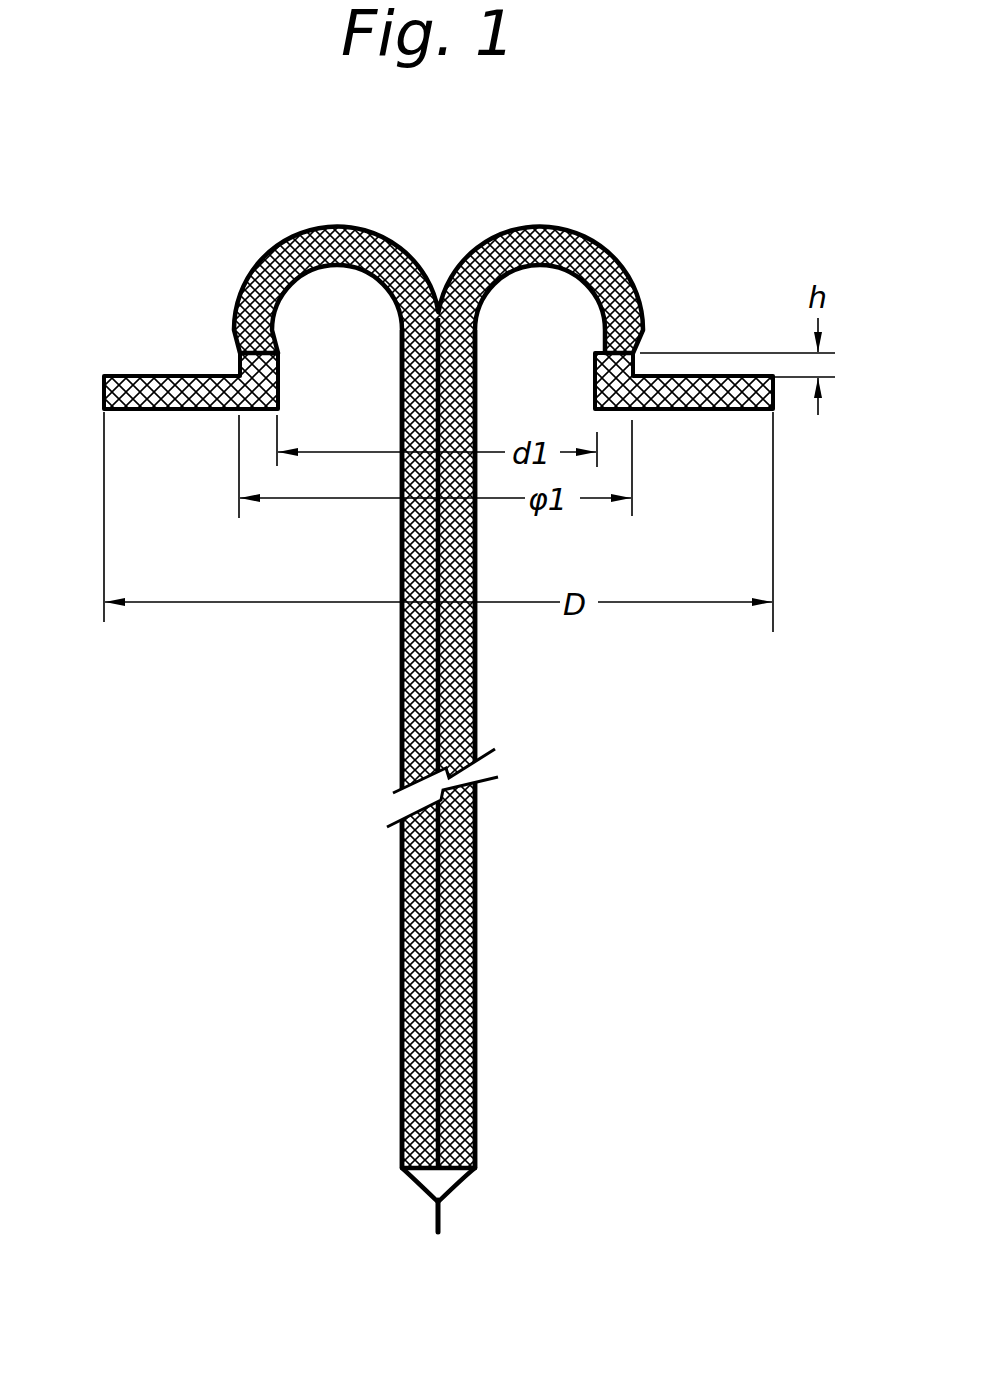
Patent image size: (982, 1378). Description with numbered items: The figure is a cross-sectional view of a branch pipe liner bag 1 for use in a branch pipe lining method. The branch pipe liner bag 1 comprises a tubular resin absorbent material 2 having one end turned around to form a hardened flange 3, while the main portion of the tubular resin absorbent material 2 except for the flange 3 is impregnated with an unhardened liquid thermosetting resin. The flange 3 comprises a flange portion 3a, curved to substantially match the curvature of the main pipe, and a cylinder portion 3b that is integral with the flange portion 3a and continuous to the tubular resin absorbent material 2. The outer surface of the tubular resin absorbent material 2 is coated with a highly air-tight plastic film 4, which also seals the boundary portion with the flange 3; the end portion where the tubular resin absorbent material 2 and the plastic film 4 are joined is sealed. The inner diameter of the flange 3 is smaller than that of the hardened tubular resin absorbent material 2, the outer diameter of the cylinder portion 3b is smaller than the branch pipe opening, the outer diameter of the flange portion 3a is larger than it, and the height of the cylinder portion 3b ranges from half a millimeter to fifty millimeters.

The branch pipe liner bag 1 is at (606, 228).
The tubular resin absorbent material 2 is at (477, 543).
The flange 3 is at (731, 412).
The flange portion 3a is at (669, 412).
The cylinder portion 3b is at (597, 362).
The plastic film 4 is at (402, 745).